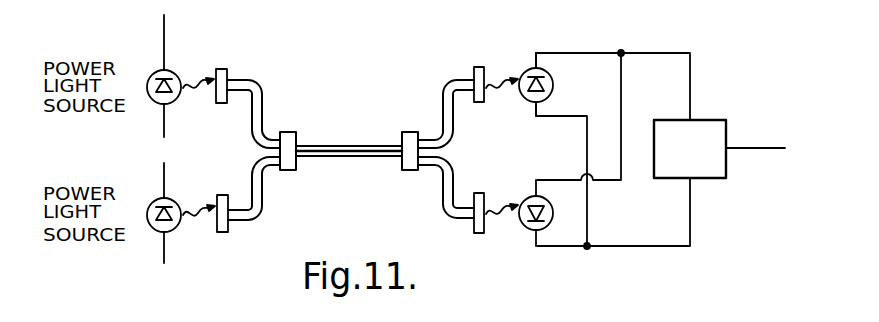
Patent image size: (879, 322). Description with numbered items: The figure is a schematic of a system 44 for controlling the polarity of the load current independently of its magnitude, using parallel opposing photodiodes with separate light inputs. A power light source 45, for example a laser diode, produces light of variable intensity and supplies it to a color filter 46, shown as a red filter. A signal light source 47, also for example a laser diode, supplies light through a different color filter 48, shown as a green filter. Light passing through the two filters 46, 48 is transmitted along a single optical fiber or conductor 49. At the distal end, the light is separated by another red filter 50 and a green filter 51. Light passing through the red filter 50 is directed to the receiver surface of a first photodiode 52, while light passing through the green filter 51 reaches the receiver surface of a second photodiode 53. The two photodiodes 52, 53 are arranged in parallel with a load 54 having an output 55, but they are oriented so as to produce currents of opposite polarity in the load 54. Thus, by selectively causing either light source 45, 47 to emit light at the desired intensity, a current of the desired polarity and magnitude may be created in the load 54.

The system 44 is at (380, 100).
The power light source 45 is at (161, 69).
The color filter 46 is at (217, 104).
The signal light source 47 is at (161, 198).
The color filter 48 is at (220, 195).
The optical fiber 49 is at (346, 145).
The red filter 50 is at (480, 103).
The green filter 51 is at (480, 193).
The first photodiode 52 is at (553, 85).
The second photodiode 53 is at (530, 229).
The load 54 is at (705, 120).
The output 55 is at (745, 148).